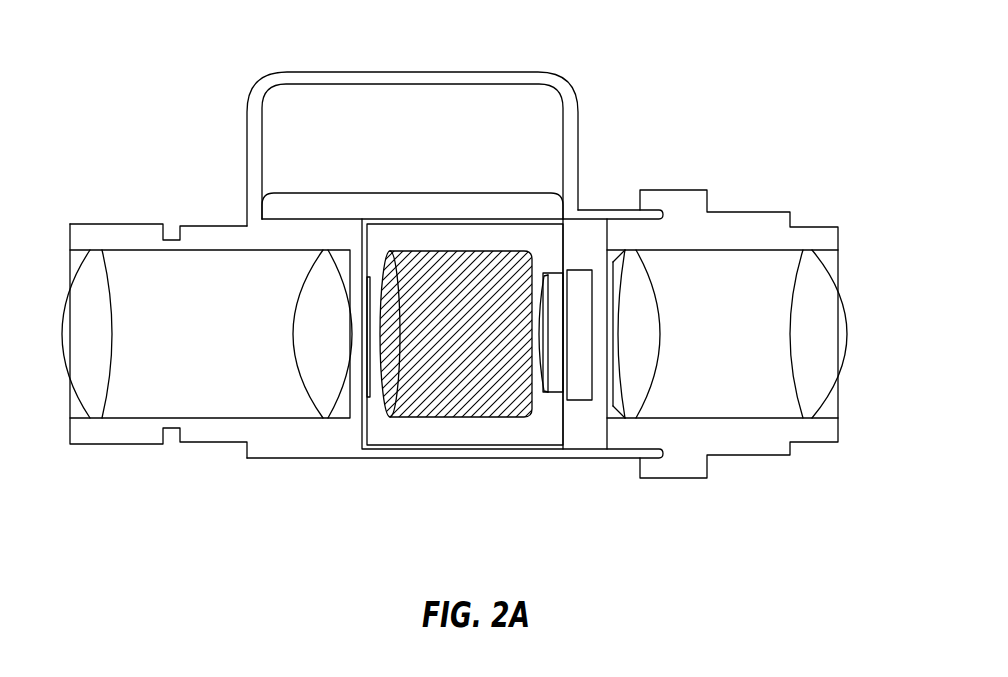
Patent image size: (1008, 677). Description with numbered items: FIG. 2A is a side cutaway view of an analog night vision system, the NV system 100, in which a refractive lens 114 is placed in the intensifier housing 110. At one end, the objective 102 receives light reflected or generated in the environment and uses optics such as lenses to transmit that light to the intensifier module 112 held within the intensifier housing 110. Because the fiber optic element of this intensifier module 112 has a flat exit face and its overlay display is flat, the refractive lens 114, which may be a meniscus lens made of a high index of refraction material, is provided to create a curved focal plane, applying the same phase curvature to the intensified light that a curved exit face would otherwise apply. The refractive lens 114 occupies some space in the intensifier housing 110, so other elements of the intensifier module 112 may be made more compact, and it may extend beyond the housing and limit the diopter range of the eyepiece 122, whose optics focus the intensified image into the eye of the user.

The NV system 100 is at (774, 57).
The objective 102 is at (347, 480).
The intensifier housing 110 is at (378, 222).
The intensifier module 112 is at (490, 252).
The refractive lens 114 is at (545, 378).
The eyepiece 122 is at (838, 488).